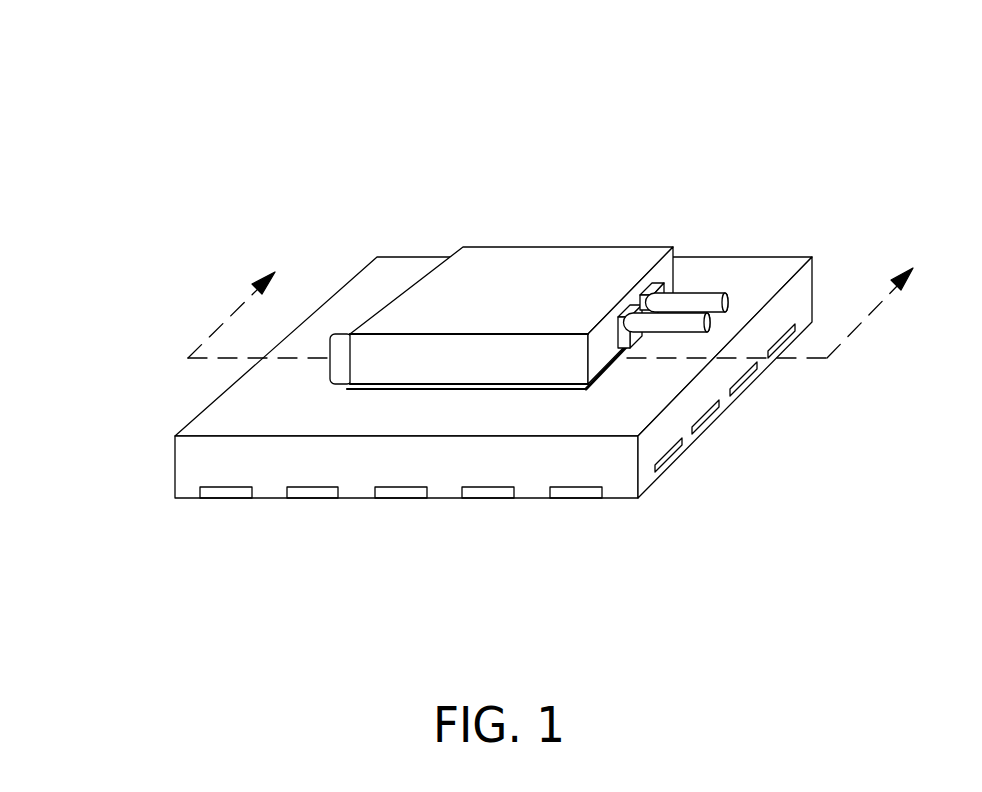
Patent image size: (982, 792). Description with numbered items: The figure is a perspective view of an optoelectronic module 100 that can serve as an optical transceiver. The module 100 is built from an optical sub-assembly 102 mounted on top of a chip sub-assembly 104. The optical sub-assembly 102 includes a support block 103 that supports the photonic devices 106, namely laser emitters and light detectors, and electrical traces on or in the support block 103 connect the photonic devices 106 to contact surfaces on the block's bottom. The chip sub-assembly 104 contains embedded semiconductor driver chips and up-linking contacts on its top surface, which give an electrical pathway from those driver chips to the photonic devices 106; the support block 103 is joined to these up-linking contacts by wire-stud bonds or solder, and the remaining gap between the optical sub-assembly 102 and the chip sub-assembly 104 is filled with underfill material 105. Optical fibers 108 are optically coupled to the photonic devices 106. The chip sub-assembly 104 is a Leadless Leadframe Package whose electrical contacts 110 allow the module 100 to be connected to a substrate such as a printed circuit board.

The optoelectronic module 100 is at (383, 33).
The optical sub-assembly 102 is at (330, 353).
The support block 103 is at (513, 247).
The chip sub-assembly 104 is at (137, 437).
The underfill material 105 is at (580, 392).
The photonic devices 106 is at (627, 290).
The optical fibers 108 is at (672, 337).
The electrical contacts 110 is at (745, 388).